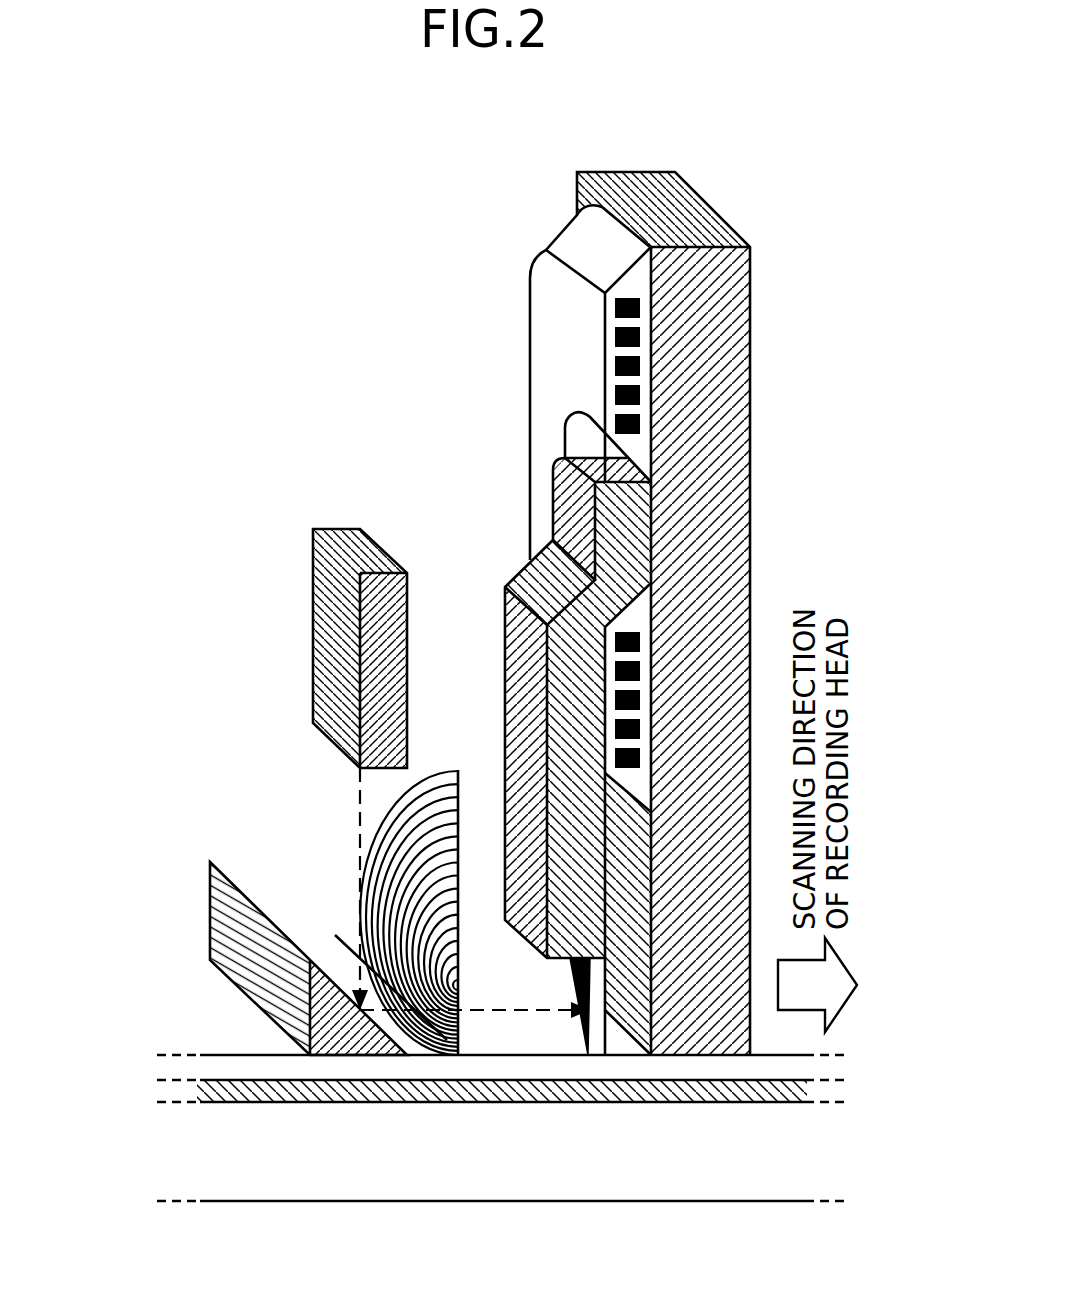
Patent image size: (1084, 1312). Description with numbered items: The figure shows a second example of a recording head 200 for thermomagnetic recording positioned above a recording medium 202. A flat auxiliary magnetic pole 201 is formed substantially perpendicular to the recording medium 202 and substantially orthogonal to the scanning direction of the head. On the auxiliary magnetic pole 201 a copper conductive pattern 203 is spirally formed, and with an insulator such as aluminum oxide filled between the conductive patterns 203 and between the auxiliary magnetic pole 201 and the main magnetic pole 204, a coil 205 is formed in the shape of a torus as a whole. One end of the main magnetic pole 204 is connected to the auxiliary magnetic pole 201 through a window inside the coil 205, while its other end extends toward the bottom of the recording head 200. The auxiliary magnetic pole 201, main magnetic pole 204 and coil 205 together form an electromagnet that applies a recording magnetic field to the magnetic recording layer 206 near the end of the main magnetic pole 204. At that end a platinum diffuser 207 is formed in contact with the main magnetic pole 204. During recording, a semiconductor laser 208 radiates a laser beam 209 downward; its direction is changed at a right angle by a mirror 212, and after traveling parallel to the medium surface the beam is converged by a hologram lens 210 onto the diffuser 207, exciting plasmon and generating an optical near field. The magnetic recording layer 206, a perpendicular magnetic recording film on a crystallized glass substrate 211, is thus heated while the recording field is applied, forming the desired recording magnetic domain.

The recording head 200 is at (866, 241).
The auxiliary magnetic pole 201 is at (725, 553).
The recording medium 202 is at (866, 1083).
The conductive pattern 203 is at (614, 364).
The main magnetic pole 204 is at (554, 734).
The coil 205 is at (545, 303).
The magnetic recording layer 206 is at (163, 1093).
The diffuser 207 is at (598, 1040).
The semiconductor laser 208 is at (363, 540).
The laser beam 209 is at (568, 1010).
The hologram lens 210 is at (403, 893).
The crystallized glass substrate 211 is at (175, 1148).
The mirror 212 is at (253, 943).